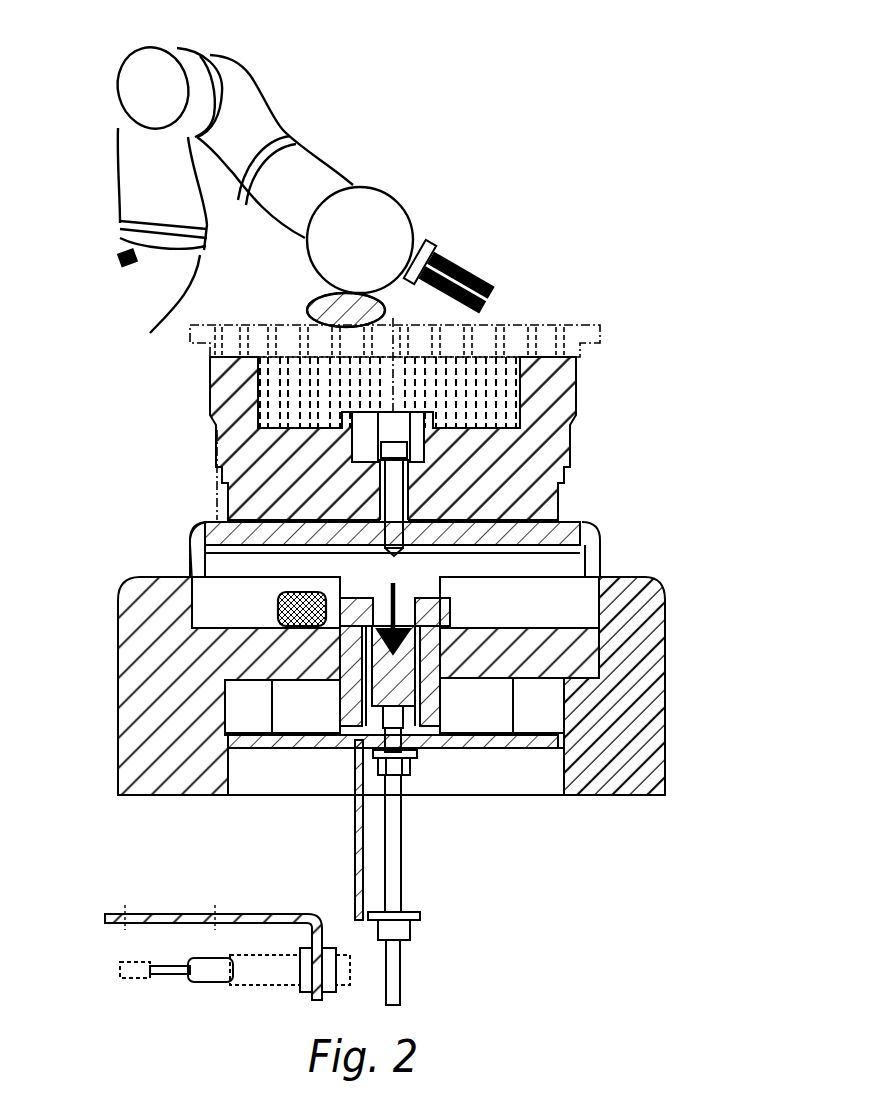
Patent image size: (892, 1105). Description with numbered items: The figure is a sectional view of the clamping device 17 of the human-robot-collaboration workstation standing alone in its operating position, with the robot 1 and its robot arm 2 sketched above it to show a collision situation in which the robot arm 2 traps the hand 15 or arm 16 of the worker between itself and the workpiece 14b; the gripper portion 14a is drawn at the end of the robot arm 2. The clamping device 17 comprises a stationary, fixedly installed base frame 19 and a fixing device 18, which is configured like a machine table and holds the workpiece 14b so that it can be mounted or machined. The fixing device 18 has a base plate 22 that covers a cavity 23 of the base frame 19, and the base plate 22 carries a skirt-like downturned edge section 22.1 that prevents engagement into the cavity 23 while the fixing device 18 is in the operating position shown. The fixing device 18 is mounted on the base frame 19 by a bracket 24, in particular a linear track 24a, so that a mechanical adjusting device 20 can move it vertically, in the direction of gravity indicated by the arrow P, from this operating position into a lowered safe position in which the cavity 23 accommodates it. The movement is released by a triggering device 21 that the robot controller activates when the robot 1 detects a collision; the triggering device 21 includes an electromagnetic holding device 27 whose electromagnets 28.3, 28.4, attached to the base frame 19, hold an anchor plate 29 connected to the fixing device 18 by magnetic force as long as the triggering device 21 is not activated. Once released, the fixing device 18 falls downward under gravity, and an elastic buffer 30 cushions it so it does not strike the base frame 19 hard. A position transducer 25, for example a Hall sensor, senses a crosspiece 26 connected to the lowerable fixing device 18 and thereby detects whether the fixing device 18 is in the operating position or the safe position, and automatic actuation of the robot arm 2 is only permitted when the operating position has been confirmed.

The robot 1 is at (400, 72).
The robot arm 2 is at (325, 168).
The gripper fingers 14a is at (455, 270).
The workpiece 14b is at (535, 335).
The hand 15 is at (346, 310).
The arm 16 is at (308, 311).
The clamping device 17 is at (133, 422).
The fixing device 18 is at (200, 538).
The base frame 19 is at (138, 672).
The mechanical adjusting device 20 is at (450, 650).
The triggering device 21 is at (322, 752).
The base plate 22 is at (590, 530).
The downturned edge section 22.1 is at (195, 570).
The cavity 23 is at (258, 617).
The bracket 24 is at (425, 688).
The linear track 24a is at (393, 666).
The position transducer 25 is at (288, 968).
The crosspiece 26 is at (353, 885).
The electromagnetic holding device 27 is at (285, 708).
The electromagnet 28.3 is at (522, 712).
The electromagnet 28.4 is at (310, 718).
The anchor plate 29 is at (523, 738).
The elastic buffer 30 is at (290, 628).
The arrow P is at (405, 598).